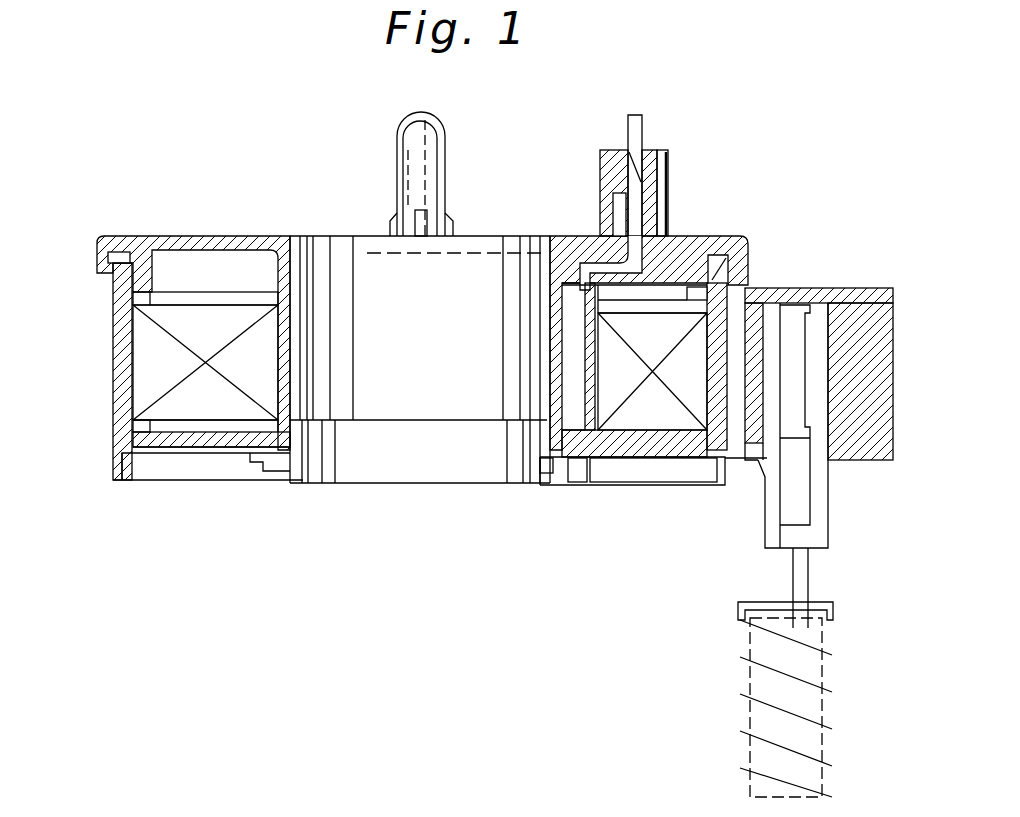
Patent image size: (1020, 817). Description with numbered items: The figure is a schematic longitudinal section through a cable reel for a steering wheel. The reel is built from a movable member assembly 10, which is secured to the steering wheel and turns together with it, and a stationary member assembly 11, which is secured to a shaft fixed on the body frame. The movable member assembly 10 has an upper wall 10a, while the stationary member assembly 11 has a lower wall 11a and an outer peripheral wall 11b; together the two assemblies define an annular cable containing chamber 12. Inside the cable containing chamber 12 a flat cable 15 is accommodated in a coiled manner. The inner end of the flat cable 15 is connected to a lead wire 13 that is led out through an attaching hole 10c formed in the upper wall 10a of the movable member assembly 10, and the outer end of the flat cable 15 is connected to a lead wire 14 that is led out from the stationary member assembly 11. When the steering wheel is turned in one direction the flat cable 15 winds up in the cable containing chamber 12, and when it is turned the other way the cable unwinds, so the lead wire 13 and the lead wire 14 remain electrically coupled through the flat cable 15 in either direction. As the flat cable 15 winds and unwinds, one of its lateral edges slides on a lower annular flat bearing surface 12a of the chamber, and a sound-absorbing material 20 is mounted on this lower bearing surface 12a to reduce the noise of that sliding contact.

The movable member assembly 10 is at (254, 232).
The upper wall 10a is at (172, 234).
The attaching hole 10c is at (640, 215).
The stationary member assembly 11 is at (100, 373).
The lower wall 11a is at (138, 420).
The outer peripheral wall 11b is at (125, 328).
The cable containing chamber 12 is at (136, 298).
The lower annular flat bearing surface 12a is at (138, 432).
The lead wire 13 is at (645, 146).
The lead wire 14 is at (793, 511).
The flat cable 15 is at (250, 400).
The sound-absorbing material 20 is at (128, 436).